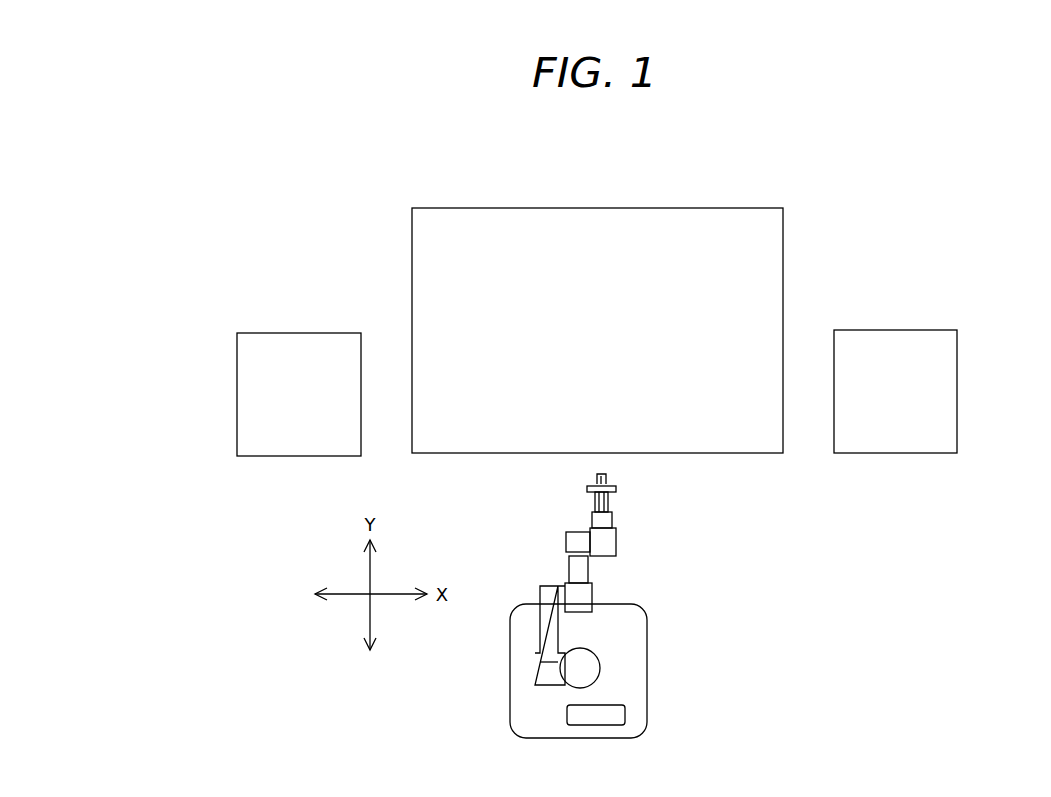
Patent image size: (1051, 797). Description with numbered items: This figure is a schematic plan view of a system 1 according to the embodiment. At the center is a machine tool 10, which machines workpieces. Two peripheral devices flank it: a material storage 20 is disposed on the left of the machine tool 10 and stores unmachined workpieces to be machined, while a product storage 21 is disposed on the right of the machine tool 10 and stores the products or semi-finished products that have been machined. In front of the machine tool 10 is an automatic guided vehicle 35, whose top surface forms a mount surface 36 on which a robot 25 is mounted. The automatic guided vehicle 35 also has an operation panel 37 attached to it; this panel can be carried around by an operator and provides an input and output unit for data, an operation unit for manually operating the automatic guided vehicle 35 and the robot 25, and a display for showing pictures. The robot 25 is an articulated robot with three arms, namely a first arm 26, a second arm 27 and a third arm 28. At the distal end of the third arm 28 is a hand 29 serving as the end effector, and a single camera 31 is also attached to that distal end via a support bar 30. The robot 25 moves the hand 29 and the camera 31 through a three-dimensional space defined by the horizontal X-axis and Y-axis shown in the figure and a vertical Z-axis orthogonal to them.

The system 1 is at (865, 597).
The machine tool 10 is at (778, 253).
The material storage 20 is at (240, 394).
The product storage 21 is at (954, 381).
The robot 25 is at (597, 579).
The first arm 26 is at (540, 637).
The second arm 27 is at (567, 563).
The third arm 28 is at (610, 524).
The hand 29 is at (592, 496).
The support bar 30 is at (618, 490).
The camera 31 is at (604, 477).
The automatic guided vehicle 35 is at (623, 679).
The mount surface 36 is at (637, 679).
The operation panel 37 is at (624, 717).